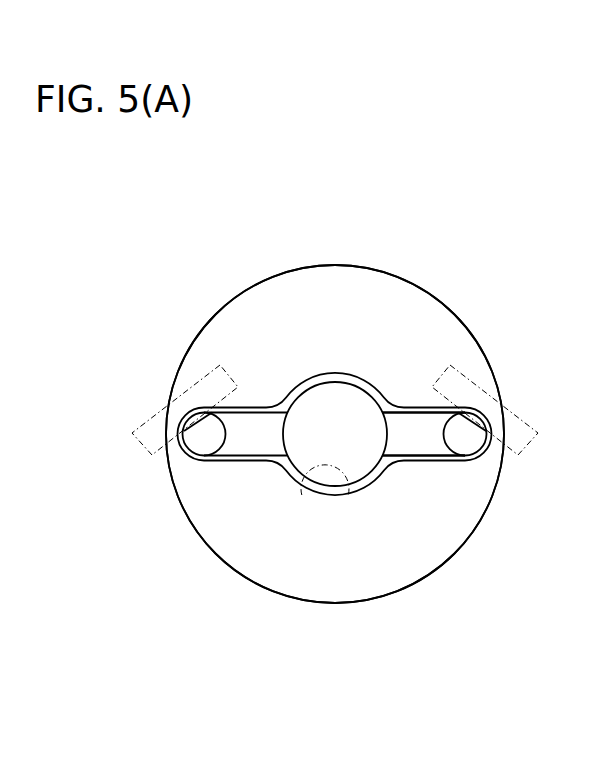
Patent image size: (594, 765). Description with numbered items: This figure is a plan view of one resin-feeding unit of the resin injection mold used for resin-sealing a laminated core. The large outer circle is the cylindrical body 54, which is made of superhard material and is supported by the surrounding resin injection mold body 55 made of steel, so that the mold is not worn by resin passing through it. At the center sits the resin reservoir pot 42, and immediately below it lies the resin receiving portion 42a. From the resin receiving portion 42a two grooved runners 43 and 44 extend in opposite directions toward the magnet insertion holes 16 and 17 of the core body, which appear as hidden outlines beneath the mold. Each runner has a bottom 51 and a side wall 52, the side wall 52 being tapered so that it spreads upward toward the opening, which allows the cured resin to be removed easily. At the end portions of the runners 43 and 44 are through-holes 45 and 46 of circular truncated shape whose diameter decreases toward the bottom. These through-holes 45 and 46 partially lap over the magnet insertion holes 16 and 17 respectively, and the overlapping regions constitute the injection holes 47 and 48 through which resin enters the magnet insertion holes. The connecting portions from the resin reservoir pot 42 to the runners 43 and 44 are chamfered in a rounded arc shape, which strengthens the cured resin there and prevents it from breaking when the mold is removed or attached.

The magnet insertion hole 16 is at (152, 417).
The magnet insertion hole 17 is at (462, 370).
The resin reservoir pot 42 is at (350, 492).
The resin receiving portion 42a is at (312, 443).
The runner 43 is at (248, 442).
The runner 44 is at (427, 448).
The through-hole 45 is at (210, 430).
The through-hole 46 is at (456, 425).
The injection hole 47 is at (172, 408).
The injection hole 48 is at (484, 407).
The bottom 51 is at (403, 436).
The side wall 52 is at (386, 393).
The cylindrical body 54 is at (312, 567).
The resin injection mold body 55 is at (160, 488).